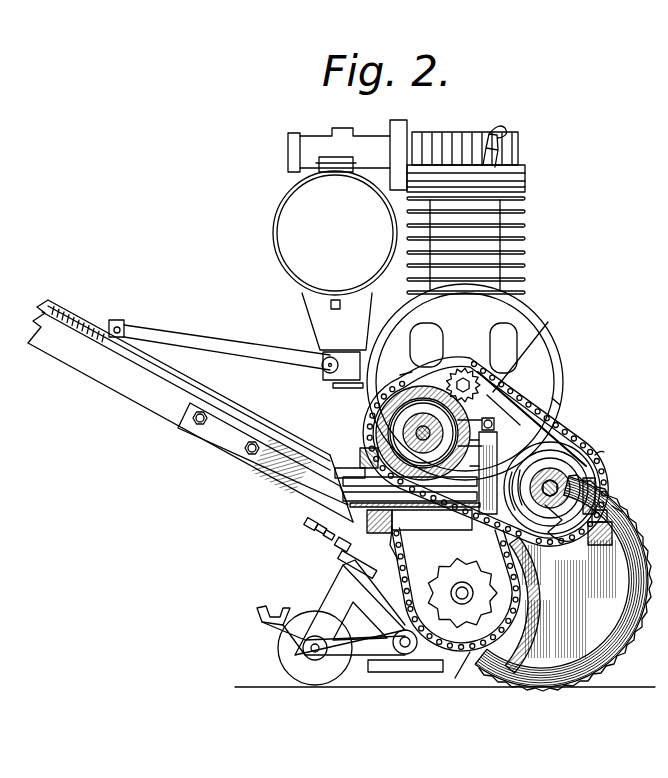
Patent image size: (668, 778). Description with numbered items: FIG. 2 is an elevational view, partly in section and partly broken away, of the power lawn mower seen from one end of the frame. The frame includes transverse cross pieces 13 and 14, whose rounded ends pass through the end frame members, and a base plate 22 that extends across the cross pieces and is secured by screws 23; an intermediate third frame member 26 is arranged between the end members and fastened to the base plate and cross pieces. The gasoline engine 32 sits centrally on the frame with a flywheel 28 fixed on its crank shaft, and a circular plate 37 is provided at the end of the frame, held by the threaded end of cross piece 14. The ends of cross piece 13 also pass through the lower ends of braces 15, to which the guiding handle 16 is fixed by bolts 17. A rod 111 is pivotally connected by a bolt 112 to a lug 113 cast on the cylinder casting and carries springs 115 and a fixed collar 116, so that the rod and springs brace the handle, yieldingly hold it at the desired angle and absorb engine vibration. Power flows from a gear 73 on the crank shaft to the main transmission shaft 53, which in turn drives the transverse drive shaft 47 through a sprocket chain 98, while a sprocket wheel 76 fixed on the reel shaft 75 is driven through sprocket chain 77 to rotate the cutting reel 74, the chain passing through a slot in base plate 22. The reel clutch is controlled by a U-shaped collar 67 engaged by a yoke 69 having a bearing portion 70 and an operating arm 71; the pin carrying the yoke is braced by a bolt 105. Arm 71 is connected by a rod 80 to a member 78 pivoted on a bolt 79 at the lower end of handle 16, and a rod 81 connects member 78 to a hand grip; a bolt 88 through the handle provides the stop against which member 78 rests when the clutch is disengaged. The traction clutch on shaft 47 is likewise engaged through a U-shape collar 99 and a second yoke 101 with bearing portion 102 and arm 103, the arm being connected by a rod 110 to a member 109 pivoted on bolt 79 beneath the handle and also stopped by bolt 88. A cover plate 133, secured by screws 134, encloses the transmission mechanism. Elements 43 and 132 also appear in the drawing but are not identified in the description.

The cross piece 13 is at (350, 573).
The cross piece 14 is at (598, 545).
The braces 15 is at (275, 490).
The guiding handle 16 is at (107, 380).
The bolts 17 is at (249, 452).
The base plate 22 is at (541, 532).
The screws 23 is at (368, 441).
The third frame member 26 is at (530, 349).
The flywheel 28 is at (524, 306).
The engine 32 is at (522, 208).
The circular plate 37 is at (605, 618).
The wheel teeth 43 is at (638, 556).
The drive shaft 47 is at (583, 486).
The shaft 53 is at (424, 425).
The U-shaped collar 67 is at (368, 419).
The yoke 69 is at (548, 392).
The bearing portion 70 is at (546, 421).
The operating arm 71 is at (366, 453).
The gear 73 is at (470, 360).
The cutting reel 74 is at (530, 608).
The reel shaft 75 is at (462, 604).
The sprocket wheel 76 is at (471, 529).
The sprocket chain 77 is at (462, 672).
The member 78 is at (336, 449).
The bolt 79 is at (316, 529).
The rod 80 is at (362, 470).
The rod 81 is at (183, 386).
The bolt 88 is at (308, 522).
The sprocket chain 98 is at (613, 493).
The U-shape collar 99 is at (597, 452).
The yoke 101 is at (553, 456).
The bearing portion 102 is at (455, 546).
The operating arm 103 is at (430, 540).
The bolt 105 is at (516, 406).
The member 109 is at (326, 536).
The rod 110 is at (346, 538).
The rod 111 is at (240, 328).
The bolt 112 is at (325, 358).
The lug 113 is at (321, 374).
The springs 115 is at (112, 319).
The collar 116 is at (126, 326).
The foot 132 is at (430, 680).
The cover plate 133 is at (576, 468).
The screws 134 is at (408, 378).